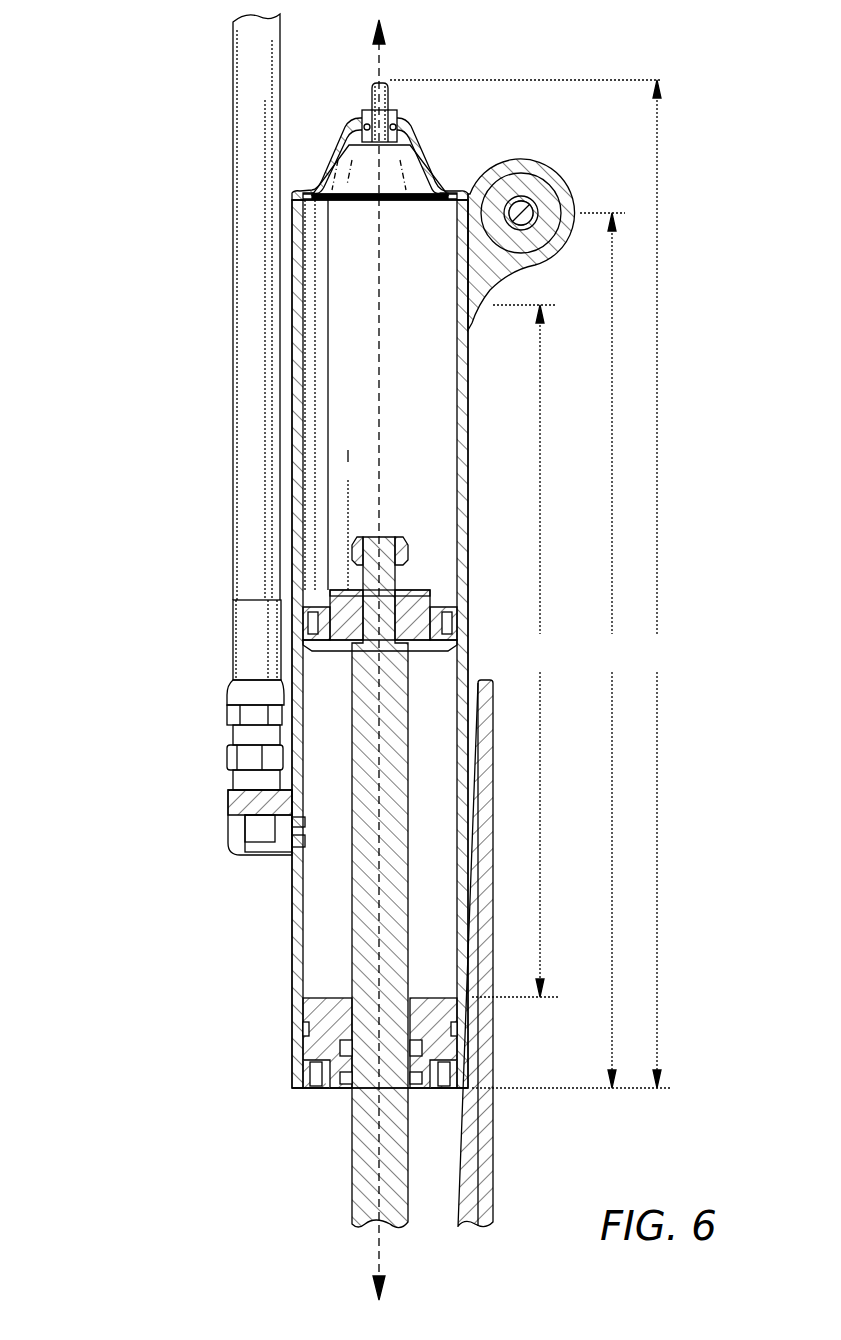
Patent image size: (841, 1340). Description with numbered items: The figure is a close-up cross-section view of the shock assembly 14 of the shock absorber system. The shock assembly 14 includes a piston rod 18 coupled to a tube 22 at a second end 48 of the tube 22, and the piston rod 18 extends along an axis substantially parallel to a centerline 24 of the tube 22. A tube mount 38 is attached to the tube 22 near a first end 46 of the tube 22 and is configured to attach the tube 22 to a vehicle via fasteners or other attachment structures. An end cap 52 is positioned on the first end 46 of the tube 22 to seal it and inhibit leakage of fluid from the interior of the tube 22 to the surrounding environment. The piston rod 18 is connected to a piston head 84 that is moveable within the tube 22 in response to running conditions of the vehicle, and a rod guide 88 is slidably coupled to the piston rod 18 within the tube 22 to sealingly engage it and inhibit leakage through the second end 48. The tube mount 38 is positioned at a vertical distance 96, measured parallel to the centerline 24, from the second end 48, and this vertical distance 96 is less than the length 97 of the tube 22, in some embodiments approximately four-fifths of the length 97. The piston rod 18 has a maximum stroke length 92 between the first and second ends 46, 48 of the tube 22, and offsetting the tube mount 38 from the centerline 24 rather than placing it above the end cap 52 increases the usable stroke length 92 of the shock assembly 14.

The shock assembly 14 is at (140, 332).
The piston rod 18 is at (360, 928).
The tube 22 is at (300, 292).
The centerline 24 is at (386, 56).
The tube mount 38 is at (545, 176).
The first end 46 is at (270, 188).
The second end 48 is at (284, 1116).
The end cap 52 is at (342, 150).
The piston head 84 is at (305, 628).
The rod guide 88 is at (322, 1028).
The maximum stroke length 92 is at (515, 651).
The vertical distance 96 is at (603, 650).
The length 97 is at (531, 584).